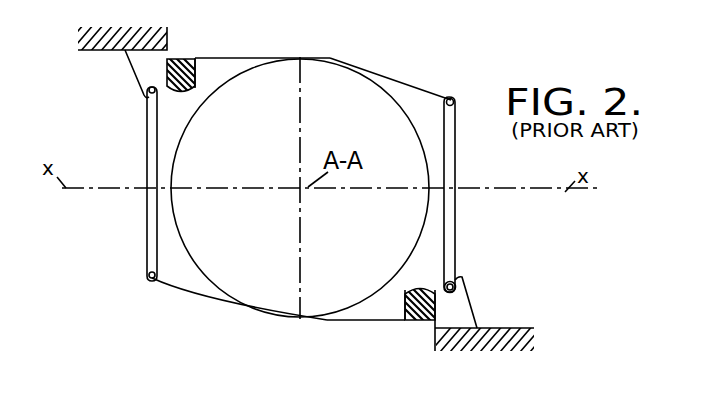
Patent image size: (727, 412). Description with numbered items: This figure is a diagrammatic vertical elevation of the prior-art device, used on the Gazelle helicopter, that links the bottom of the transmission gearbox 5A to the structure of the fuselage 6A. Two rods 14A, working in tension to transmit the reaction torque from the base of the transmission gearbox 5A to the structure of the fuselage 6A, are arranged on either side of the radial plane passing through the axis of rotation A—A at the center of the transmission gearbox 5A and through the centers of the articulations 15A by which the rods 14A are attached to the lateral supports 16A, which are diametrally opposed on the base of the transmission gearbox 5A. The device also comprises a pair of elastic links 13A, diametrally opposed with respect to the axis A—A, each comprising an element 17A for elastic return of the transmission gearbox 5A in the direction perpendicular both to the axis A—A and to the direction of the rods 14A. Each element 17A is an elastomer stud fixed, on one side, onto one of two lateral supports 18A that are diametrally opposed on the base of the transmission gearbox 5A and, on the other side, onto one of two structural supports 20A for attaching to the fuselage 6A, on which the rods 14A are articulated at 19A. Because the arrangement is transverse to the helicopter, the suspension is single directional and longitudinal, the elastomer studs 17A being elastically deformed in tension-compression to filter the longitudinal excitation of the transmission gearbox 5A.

The transmission gearbox 5A is at (337, 75).
The structure of the fuselage 6A is at (102, 51).
The elastic links 13A is at (181, 59).
The rods 14A is at (148, 145).
The articulations 15A is at (453, 101).
The lateral supports 16A is at (410, 95).
The element for elastic return 17A is at (188, 88).
The lateral supports 18A is at (236, 61).
The articulation of rods on structural supports 19A is at (458, 289).
The structural supports 20A is at (460, 307).